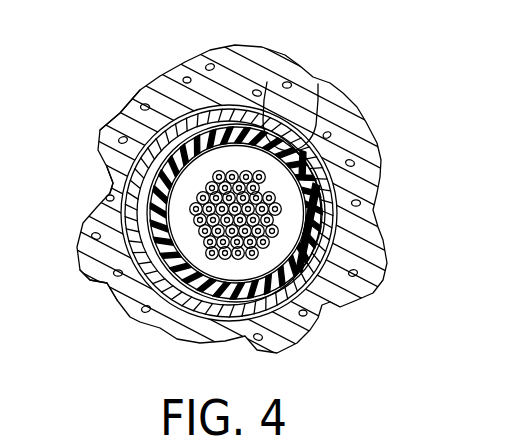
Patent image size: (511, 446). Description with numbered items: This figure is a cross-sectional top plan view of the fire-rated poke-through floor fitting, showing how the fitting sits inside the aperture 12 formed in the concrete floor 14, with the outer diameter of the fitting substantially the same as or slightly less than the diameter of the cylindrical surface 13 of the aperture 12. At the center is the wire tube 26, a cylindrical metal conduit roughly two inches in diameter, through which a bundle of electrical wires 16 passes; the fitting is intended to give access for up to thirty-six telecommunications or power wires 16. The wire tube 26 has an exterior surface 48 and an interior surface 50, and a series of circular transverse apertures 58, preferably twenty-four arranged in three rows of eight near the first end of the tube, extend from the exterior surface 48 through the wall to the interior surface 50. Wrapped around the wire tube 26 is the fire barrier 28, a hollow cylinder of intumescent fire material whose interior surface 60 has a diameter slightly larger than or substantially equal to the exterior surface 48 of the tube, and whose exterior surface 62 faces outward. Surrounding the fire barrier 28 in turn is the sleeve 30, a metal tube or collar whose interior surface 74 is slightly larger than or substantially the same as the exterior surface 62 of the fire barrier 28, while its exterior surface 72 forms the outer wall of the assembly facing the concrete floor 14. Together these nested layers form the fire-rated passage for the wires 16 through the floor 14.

The aperture 12 is at (300, 338).
The cylindrical surface 13 is at (196, 323).
The concrete floor 14 is at (372, 124).
The electrical wires 16 is at (211, 252).
The wire tube 26 is at (372, 200).
The fire barrier 28 is at (330, 217).
The sleeve 30 is at (338, 258).
The exterior surface 48 is at (318, 84).
The interior surface 50 is at (267, 82).
The apertures 58 is at (316, 295).
The interior surface 60 is at (123, 284).
The exterior surface 62 is at (121, 251).
The exterior surface 72 is at (113, 189).
The interior surface 74 is at (108, 122).